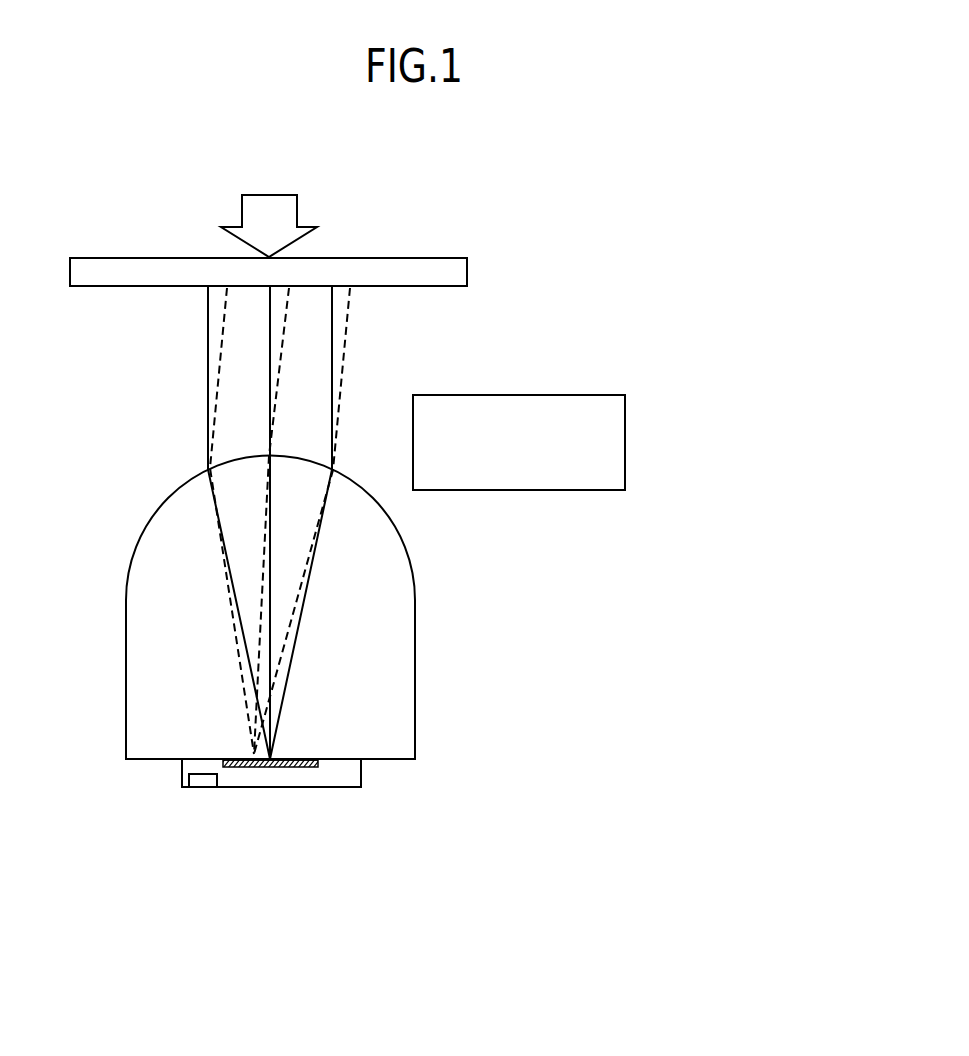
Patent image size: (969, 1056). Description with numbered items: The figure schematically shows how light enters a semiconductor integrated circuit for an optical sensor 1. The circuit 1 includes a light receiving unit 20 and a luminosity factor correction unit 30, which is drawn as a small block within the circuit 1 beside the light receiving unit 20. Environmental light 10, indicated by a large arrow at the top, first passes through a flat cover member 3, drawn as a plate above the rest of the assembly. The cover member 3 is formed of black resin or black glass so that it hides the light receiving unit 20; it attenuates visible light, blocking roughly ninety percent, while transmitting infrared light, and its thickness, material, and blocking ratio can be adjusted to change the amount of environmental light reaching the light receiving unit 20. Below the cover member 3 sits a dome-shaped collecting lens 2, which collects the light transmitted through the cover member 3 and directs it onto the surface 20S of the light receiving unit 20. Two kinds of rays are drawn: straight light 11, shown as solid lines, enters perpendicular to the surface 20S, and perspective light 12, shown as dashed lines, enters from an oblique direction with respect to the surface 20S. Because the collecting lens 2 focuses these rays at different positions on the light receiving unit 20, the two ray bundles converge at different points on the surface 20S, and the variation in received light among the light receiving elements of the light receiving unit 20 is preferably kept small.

The semiconductor integrated circuit for an optical sensor 1 is at (352, 773).
The collecting lens 2 is at (408, 643).
The cover member 3 is at (461, 275).
The environmental light 10 is at (288, 208).
The straight light 11 is at (427, 423).
The perspective light 12 is at (427, 464).
The light receiving unit 20 is at (272, 767).
The surface of light receiving unit 20S is at (303, 759).
The luminosity factor correction unit 30 is at (203, 787).